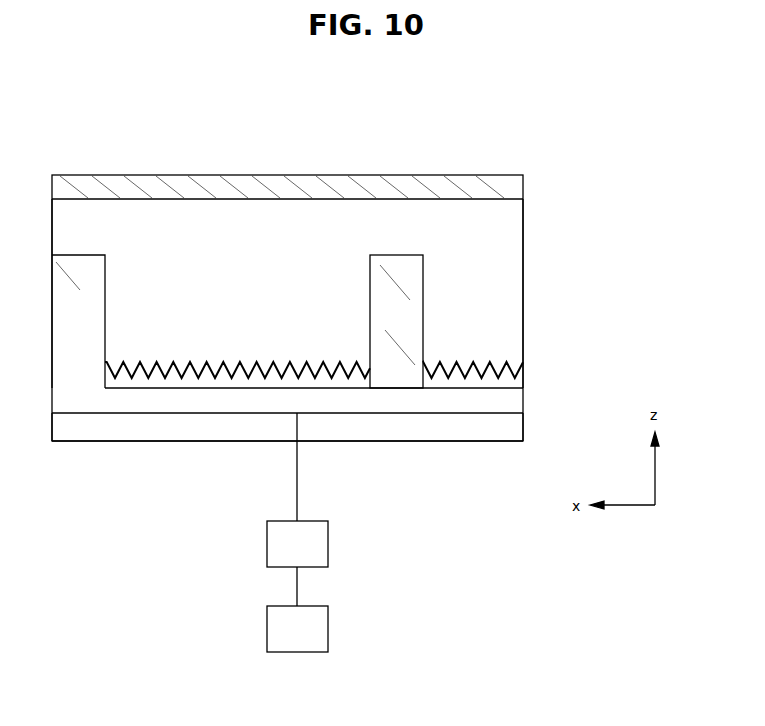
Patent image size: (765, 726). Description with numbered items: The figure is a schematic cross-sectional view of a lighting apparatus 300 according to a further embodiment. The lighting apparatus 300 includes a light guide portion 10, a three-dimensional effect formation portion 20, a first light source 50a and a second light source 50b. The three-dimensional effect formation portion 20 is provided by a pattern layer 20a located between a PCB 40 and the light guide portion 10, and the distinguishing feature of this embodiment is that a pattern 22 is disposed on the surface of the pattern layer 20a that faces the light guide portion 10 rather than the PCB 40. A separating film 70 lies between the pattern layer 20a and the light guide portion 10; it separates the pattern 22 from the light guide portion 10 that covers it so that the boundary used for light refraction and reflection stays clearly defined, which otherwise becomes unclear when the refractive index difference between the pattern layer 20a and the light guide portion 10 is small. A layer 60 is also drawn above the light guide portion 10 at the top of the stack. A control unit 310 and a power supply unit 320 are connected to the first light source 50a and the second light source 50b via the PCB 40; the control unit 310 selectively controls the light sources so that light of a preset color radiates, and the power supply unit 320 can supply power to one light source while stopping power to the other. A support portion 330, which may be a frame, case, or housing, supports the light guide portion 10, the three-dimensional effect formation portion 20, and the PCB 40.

The lighting apparatus 300 is at (110, 149).
The cover layer 60 is at (513, 190).
The light guide portion 10 is at (513, 253).
The three-dimensional effect formation portion 20 is at (188, 371).
The pattern 22 is at (205, 377).
The pattern layer 20a is at (510, 380).
The separating film 70 is at (512, 358).
The PCB 40 is at (512, 400).
The support portion 330 is at (512, 430).
The first light source 50a is at (63, 378).
The second light source 50b is at (390, 383).
The control unit 310 is at (328, 540).
The power supply unit 320 is at (328, 620).